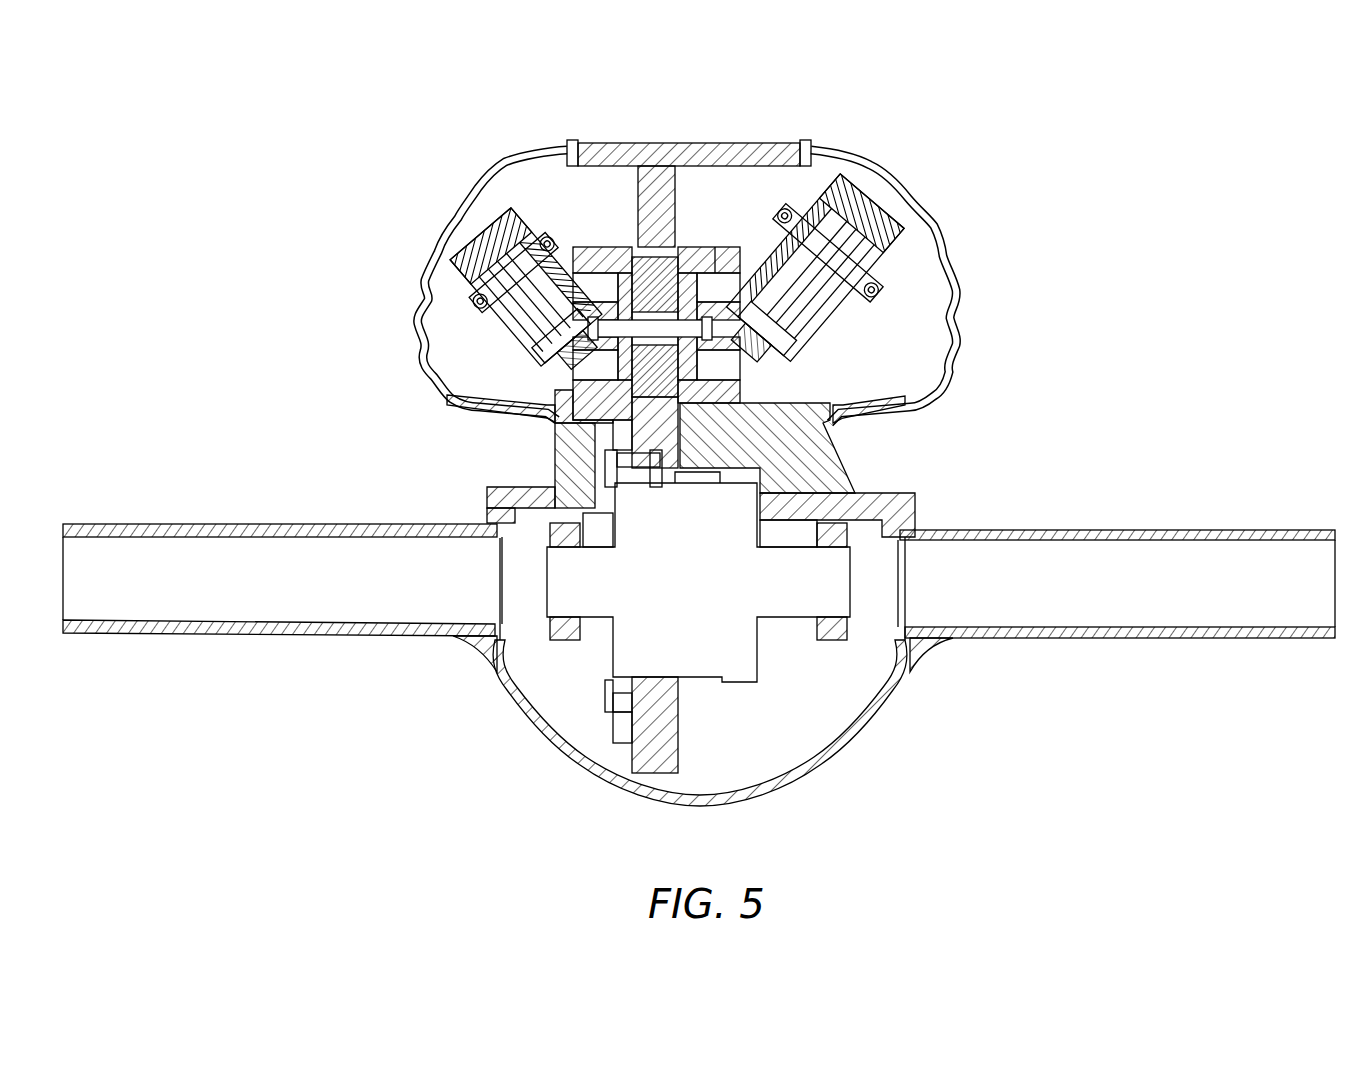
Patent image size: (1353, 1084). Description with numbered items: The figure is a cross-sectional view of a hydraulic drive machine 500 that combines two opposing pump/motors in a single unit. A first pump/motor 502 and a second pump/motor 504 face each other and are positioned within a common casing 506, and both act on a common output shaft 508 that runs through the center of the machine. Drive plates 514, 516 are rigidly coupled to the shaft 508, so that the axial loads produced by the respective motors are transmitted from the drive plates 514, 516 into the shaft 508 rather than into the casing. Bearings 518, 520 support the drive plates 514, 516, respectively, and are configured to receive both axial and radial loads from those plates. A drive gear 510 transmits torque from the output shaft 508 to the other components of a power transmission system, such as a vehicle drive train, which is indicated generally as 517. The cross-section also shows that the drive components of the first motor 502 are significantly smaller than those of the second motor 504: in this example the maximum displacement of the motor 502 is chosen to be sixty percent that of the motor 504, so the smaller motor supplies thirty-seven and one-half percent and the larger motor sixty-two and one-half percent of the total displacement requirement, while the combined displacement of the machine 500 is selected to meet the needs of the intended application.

The drive machine 500 is at (238, 127).
The first pump/motor 502 is at (562, 298).
The second pump/motor 504 is at (833, 172).
The common casing 506 is at (608, 150).
The common output shaft 508 is at (688, 290).
The drive gear 510 is at (655, 317).
The first drive plate 514 is at (585, 250).
The second drive plate 516 is at (716, 297).
The vehicle drive train 517 is at (546, 680).
The first bearing 518 is at (587, 369).
The second bearing 520 is at (745, 388).